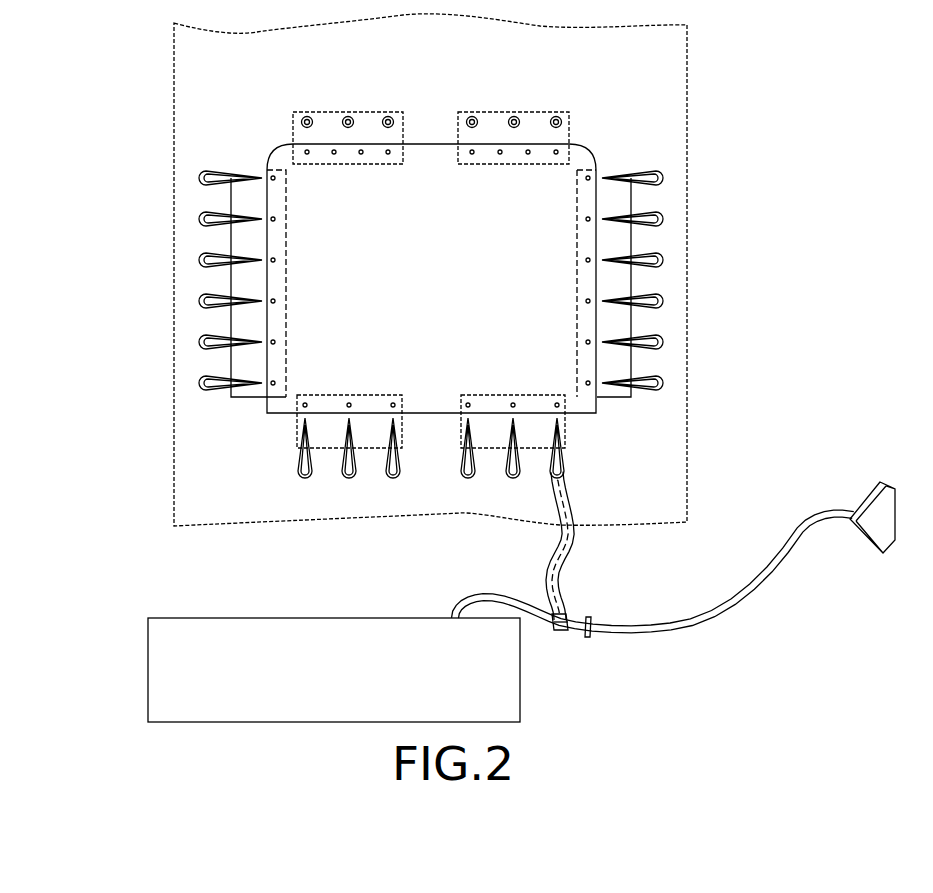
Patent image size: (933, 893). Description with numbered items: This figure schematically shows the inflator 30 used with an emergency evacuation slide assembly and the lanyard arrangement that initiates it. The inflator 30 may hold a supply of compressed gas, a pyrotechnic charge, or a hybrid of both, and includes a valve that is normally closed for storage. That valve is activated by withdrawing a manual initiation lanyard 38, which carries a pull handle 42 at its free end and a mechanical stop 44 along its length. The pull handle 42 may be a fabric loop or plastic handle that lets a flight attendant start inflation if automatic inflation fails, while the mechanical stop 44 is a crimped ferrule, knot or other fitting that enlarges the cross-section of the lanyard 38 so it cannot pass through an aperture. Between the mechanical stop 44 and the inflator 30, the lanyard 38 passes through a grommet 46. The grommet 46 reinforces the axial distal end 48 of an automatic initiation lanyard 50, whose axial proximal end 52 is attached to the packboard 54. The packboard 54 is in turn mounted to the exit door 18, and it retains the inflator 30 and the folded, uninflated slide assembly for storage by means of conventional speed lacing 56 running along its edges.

The exit door 18 is at (666, 105).
The inflator 30 is at (380, 618).
The manual initiation lanyard 38 is at (793, 535).
The pull handle 42 is at (877, 493).
The mechanical stop 44 is at (590, 617).
The grommet 46 is at (560, 627).
The axial distal end 48 is at (563, 628).
The automatic initiation lanyard 50 is at (577, 550).
The axial proximal end 52 is at (566, 448).
The packboard 54 is at (567, 173).
The speed lacing 56 is at (662, 218).